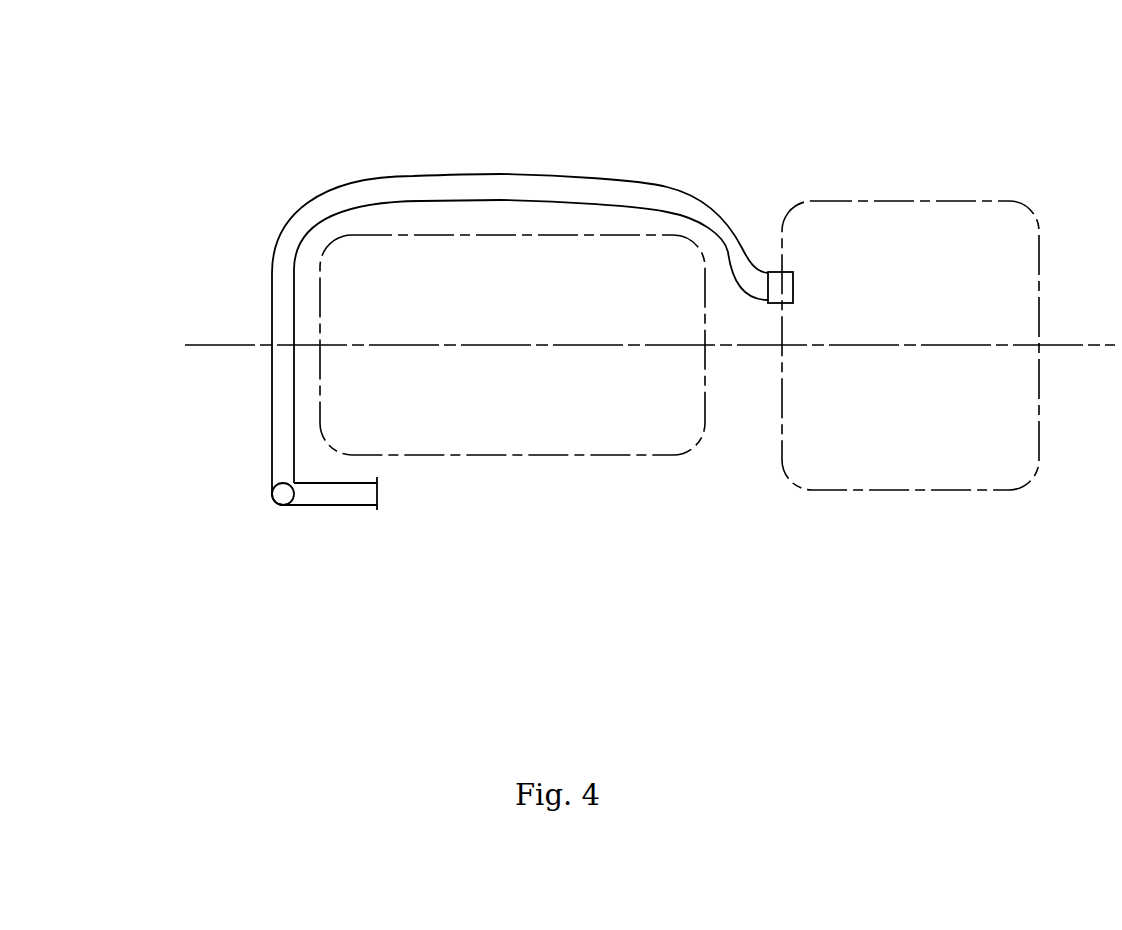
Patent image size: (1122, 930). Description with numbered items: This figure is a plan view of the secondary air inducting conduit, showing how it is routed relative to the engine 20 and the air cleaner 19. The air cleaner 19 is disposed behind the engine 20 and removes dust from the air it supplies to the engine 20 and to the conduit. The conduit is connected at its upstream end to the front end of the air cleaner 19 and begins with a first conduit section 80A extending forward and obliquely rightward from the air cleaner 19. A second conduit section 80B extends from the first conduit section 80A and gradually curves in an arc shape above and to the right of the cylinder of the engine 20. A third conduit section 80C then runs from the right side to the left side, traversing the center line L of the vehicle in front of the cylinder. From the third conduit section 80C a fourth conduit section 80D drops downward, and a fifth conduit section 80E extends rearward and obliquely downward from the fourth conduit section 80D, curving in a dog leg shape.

The center line L is at (230, 335).
The air cleaner 19 is at (908, 492).
The engine 20 is at (512, 457).
The first conduit section 80A is at (740, 258).
The second conduit section 80B is at (512, 185).
The third conduit section 80C is at (280, 392).
The fourth conduit section 80D is at (272, 503).
The fifth conduit section 80E is at (357, 495).